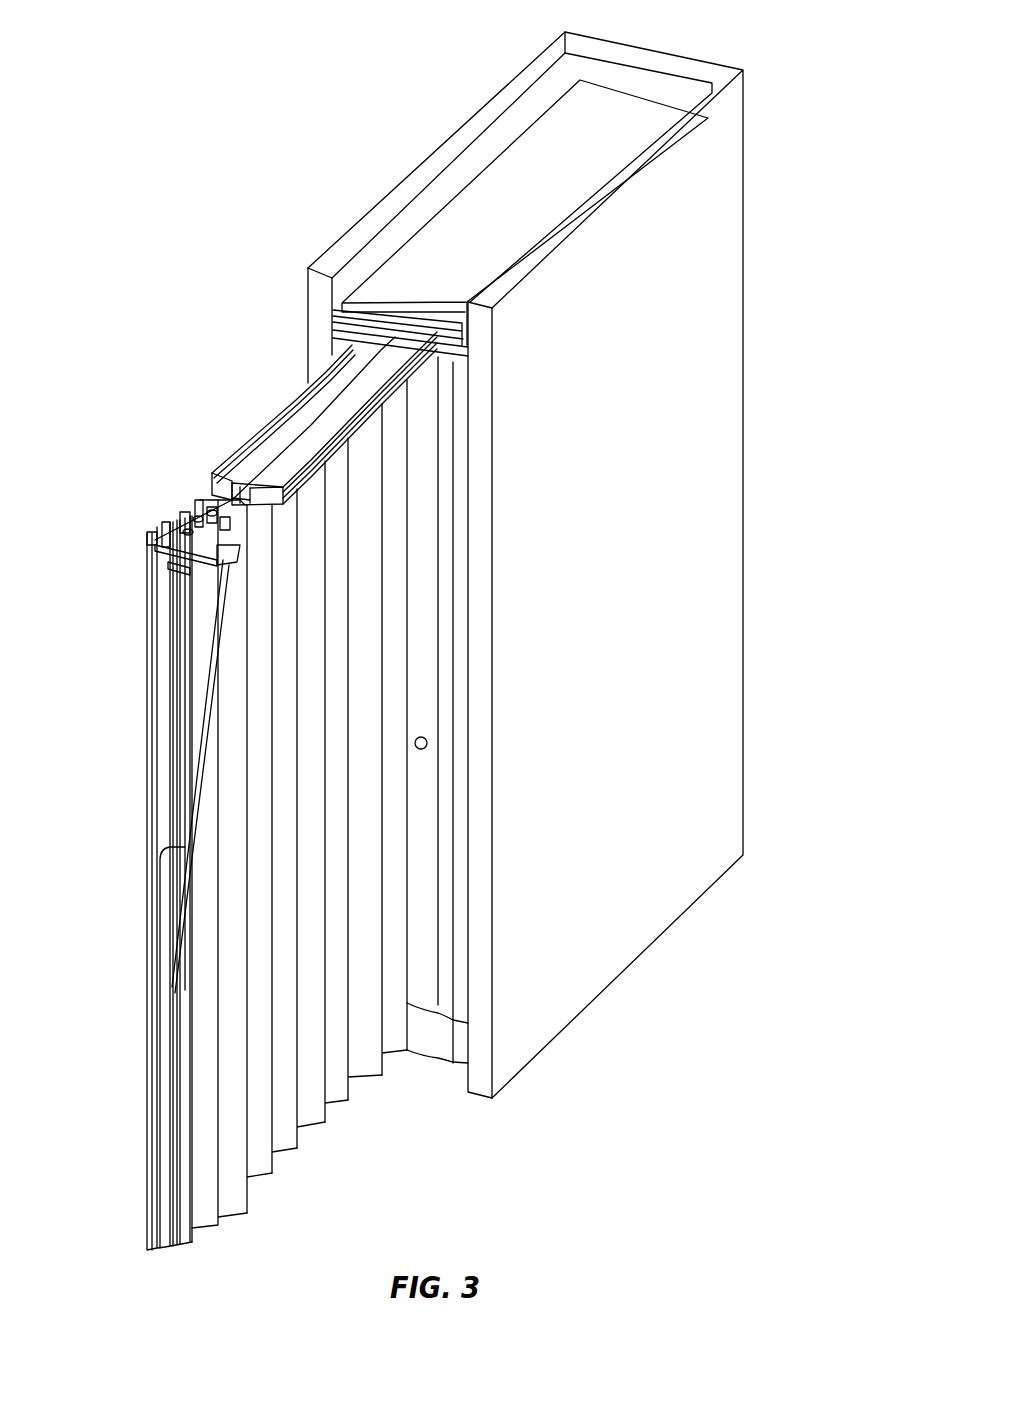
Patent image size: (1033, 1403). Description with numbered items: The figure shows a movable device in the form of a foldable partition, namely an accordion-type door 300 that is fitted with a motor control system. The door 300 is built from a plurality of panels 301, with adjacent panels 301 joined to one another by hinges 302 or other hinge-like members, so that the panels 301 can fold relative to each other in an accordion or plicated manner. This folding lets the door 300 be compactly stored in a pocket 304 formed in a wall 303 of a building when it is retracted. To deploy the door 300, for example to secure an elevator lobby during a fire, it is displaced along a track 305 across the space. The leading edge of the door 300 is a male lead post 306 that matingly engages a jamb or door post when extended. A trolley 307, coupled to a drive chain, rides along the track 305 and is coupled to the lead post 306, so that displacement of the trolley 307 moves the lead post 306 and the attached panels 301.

The accordion-type door 300 is at (206, 463).
The panels 301 is at (286, 1150).
The hinges 302 is at (300, 1130).
The wall 303 is at (306, 300).
The pocket 304 is at (432, 1070).
The track 305 is at (263, 420).
The male lead post 306 is at (157, 792).
The trolley 307 is at (213, 563).